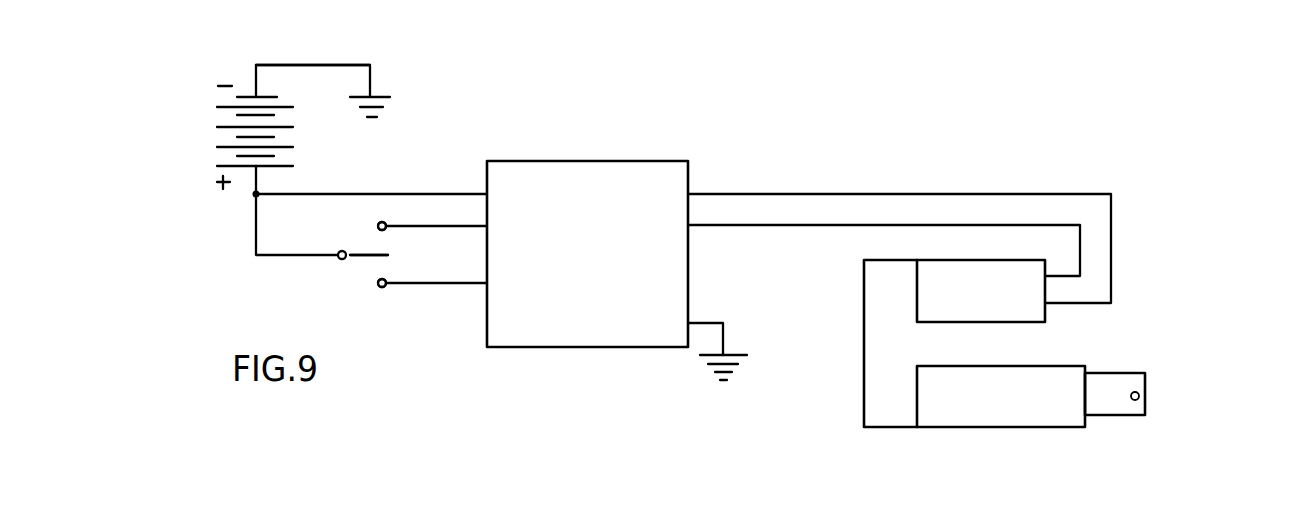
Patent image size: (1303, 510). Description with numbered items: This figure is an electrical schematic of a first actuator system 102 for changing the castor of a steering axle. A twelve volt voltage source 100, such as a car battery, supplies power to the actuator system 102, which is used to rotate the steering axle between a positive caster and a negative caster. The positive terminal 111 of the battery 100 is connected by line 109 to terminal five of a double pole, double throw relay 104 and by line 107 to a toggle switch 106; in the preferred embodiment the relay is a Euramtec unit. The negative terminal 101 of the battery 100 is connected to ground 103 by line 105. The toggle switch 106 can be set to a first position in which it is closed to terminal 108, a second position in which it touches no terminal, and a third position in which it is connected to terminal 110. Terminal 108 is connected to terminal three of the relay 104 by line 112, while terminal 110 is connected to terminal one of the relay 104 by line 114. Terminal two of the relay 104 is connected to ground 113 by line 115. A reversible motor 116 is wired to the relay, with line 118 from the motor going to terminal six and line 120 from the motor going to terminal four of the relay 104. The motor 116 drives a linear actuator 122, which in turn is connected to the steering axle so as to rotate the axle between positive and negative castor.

The voltage source 100 is at (222, 76).
The negative terminal 101 is at (263, 97).
The actuator system 102 is at (253, 296).
The ground 103 is at (383, 97).
The double pole, double throw relay 104 is at (595, 160).
The line 105 is at (363, 64).
The toggle switch 106 is at (366, 269).
The line 107 is at (256, 238).
The terminal 108 is at (380, 223).
The line 109 is at (443, 192).
The terminal 110 is at (381, 288).
The positive terminal 111 is at (260, 192).
The line 112 is at (423, 228).
The ground 113 is at (740, 354).
The line 114 is at (432, 288).
The line 115 is at (711, 321).
The reversible motor 116 is at (937, 268).
The line 118 is at (838, 226).
The line 120 is at (895, 192).
The linear actuator 122 is at (978, 421).